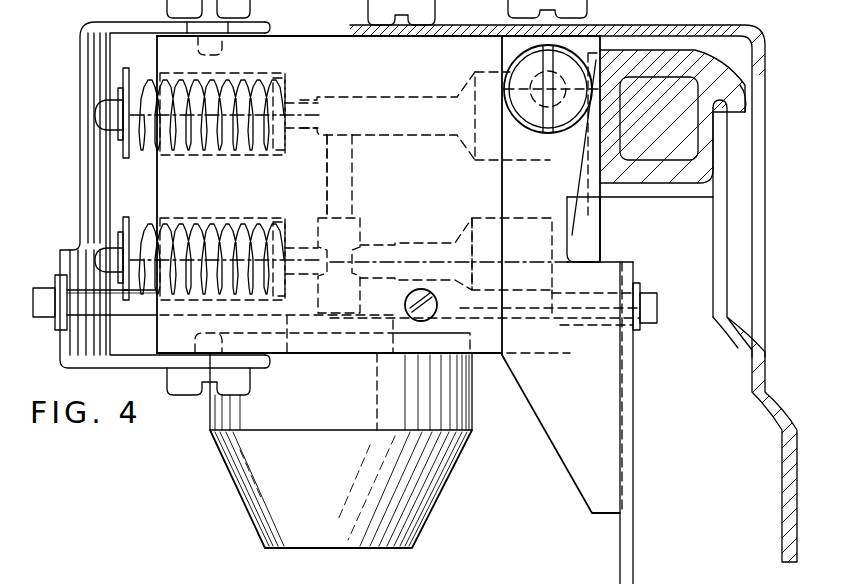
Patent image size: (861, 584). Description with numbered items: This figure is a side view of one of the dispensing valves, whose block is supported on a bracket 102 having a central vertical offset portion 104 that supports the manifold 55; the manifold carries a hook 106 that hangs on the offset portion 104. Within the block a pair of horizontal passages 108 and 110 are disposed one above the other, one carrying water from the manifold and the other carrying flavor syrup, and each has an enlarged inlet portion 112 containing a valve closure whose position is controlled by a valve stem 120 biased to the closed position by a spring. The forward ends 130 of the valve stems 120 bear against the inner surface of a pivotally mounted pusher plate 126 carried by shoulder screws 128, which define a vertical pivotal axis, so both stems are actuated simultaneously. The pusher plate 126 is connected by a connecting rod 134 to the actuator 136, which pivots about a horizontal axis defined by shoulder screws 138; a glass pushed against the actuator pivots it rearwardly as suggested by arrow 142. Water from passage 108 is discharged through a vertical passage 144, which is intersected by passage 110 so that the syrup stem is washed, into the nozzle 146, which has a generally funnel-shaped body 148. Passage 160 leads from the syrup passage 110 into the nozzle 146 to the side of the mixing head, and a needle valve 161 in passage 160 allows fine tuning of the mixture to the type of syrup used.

The bracket 102 is at (766, 47).
The central vertical offset portion 104 is at (730, 214).
The hook 106 is at (746, 109).
The horizontal passage 108 is at (393, 97).
The horizontal passage 110 is at (414, 238).
The enlarged inlet portion 112 is at (491, 156).
The valve stem 120 is at (318, 248).
The pusher plate 126 is at (82, 122).
The shoulder screws 128 is at (176, 394).
The forward ends 130 is at (98, 110).
The connecting rod 134 is at (112, 306).
The actuator 136 is at (637, 527).
The shoulder screws 138 is at (582, 89).
The arrow 142 is at (612, 468).
The vertical passage 144 is at (353, 179).
The nozzle 146 is at (436, 508).
The funnel-shaped body 148 is at (346, 497).
The manifold 55 is at (633, 168).
The passage 160 is at (413, 324).
The needle valve 161 is at (437, 305).